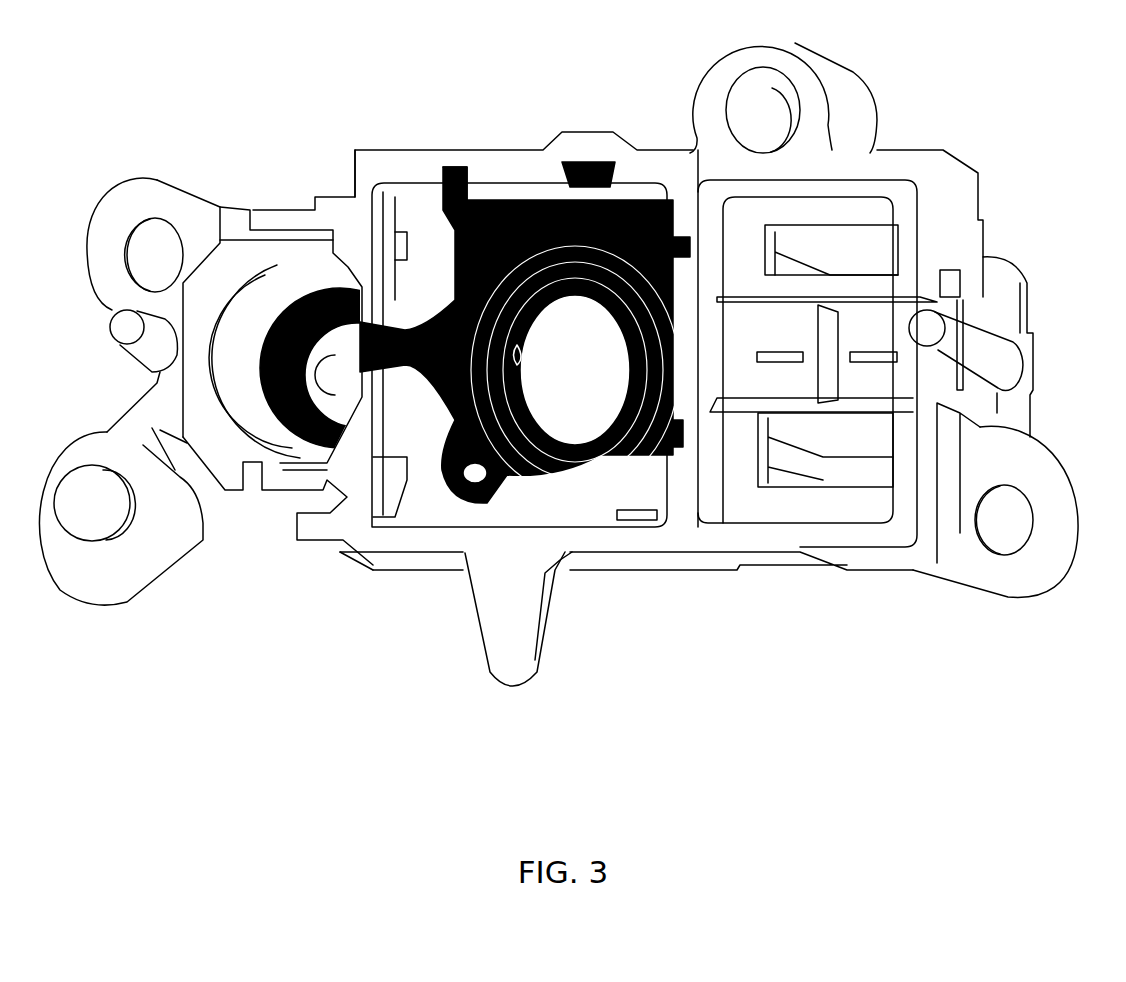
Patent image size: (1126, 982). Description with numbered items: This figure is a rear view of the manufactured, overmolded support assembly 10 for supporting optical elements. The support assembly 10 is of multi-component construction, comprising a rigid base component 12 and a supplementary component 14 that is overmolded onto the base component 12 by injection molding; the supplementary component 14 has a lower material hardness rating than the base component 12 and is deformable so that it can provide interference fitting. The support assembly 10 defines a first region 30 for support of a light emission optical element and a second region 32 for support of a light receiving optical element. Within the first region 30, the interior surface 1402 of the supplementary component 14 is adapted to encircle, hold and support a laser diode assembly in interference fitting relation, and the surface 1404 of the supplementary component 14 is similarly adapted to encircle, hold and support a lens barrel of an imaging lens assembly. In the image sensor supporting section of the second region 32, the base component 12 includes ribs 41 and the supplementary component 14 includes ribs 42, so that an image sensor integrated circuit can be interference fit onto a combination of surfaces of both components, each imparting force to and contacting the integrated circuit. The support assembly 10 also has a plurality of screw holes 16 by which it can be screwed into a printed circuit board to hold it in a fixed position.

The support assembly 10 is at (958, 178).
The base component 12 is at (206, 350).
The supplementary component 14 is at (277, 535).
The screw holes 16 is at (145, 248).
The first region 30 is at (270, 280).
The second region 32 is at (500, 285).
The ribs 41 is at (400, 245).
The ribs 42 is at (462, 228).
The interior surface 1402 is at (307, 337).
The surface 1404 is at (522, 345).